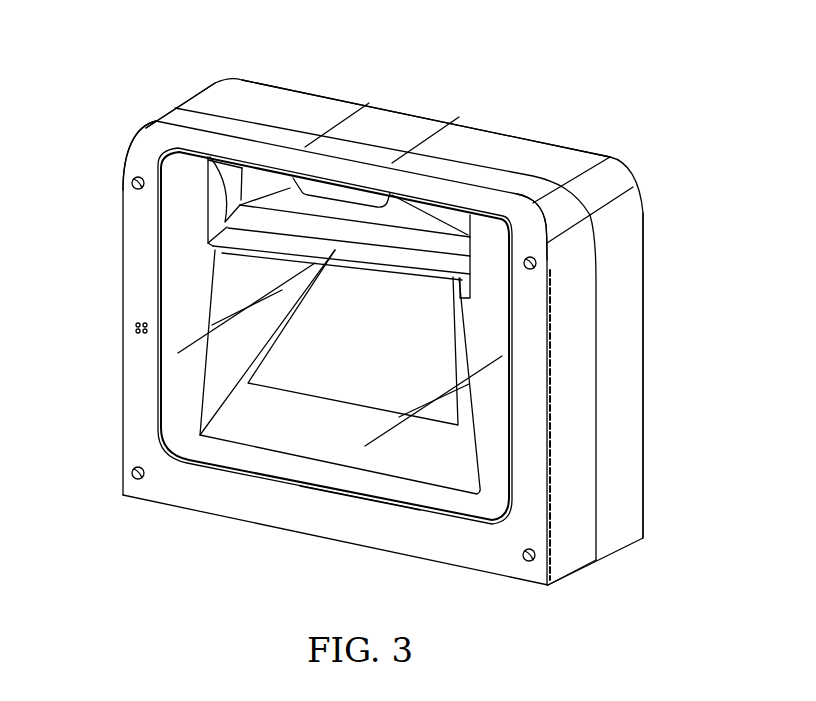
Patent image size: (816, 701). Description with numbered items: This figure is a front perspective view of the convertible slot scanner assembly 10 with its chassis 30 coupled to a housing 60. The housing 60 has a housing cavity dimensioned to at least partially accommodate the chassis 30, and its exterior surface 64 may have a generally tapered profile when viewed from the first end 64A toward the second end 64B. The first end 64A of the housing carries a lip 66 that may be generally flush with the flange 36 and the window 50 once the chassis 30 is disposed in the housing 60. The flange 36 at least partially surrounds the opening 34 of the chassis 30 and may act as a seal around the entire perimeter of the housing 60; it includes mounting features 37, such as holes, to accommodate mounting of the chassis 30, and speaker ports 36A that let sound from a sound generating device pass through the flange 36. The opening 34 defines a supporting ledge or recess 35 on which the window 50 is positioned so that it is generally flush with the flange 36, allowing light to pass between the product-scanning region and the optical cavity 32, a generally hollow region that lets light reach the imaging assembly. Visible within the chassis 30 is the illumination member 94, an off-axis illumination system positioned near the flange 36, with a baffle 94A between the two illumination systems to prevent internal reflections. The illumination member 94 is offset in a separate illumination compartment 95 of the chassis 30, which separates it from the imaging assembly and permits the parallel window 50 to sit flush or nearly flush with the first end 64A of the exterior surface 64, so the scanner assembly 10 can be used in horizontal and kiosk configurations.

The convertible slot scanner assembly 10 is at (679, 366).
The chassis 30 is at (544, 427).
The optical cavity 32 is at (310, 420).
The opening 34 is at (358, 503).
The supporting ledge or recess 35 is at (157, 417).
The flange 36 is at (137, 367).
The speaker ports 36A is at (132, 327).
The mounting features 37 is at (127, 473).
The first window 50 is at (177, 296).
The housing 60 is at (639, 276).
The exterior surface 64 is at (368, 117).
The first end 64A is at (148, 126).
The second end 64B is at (255, 76).
The lip 66 is at (542, 233).
The illumination member 94 is at (339, 187).
The baffle 94A is at (444, 227).
The illumination compartment 95 is at (262, 196).